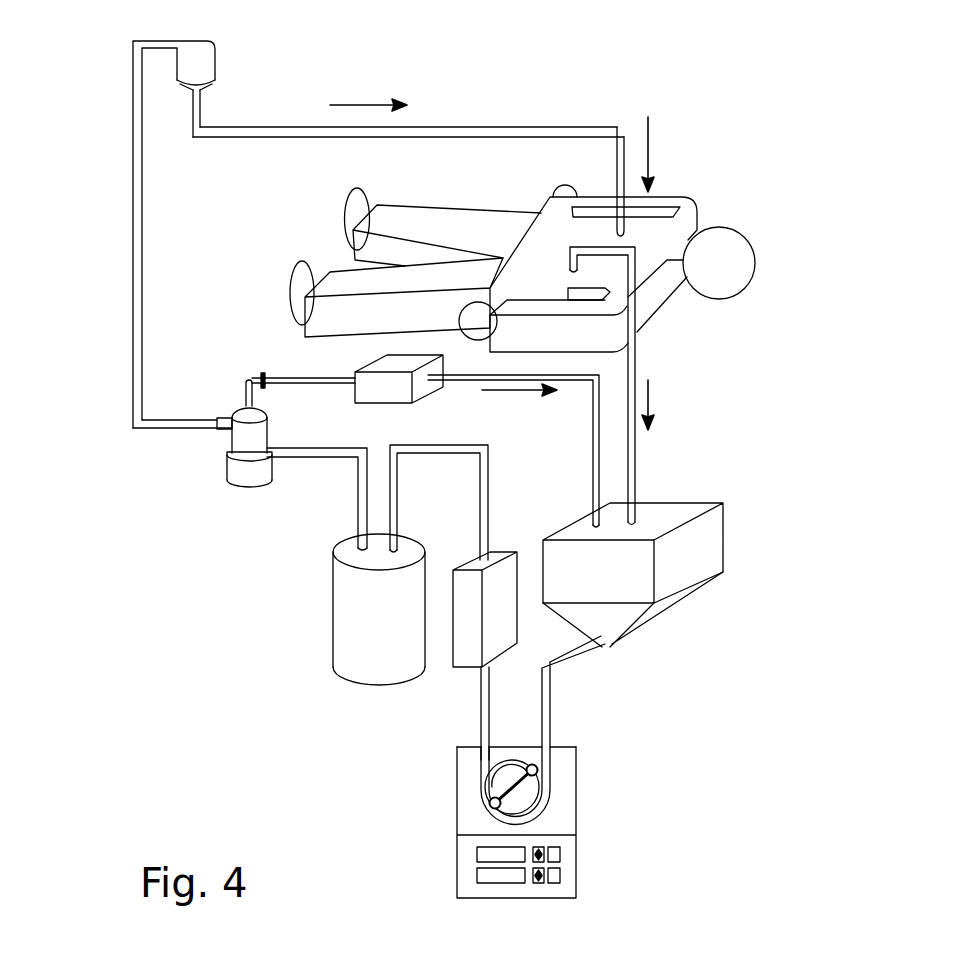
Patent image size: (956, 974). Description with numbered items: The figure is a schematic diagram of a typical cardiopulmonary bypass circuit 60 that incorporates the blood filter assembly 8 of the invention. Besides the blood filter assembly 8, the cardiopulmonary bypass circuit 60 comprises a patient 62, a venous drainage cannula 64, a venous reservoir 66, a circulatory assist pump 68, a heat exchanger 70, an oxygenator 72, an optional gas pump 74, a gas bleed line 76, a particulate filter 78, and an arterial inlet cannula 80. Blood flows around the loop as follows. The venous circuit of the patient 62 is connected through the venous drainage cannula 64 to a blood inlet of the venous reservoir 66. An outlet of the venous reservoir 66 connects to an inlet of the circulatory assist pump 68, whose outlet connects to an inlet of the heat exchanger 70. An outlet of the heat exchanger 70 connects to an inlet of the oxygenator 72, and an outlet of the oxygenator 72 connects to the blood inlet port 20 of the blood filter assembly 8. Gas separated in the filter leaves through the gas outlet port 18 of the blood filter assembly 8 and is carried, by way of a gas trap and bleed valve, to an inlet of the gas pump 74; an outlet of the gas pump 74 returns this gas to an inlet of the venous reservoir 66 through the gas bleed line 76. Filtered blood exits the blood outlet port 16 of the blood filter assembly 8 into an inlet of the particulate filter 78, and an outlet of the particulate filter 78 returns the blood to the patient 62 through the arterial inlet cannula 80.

The blood filter assembly 8 is at (233, 409).
The blood outlet port 16 is at (227, 428).
The gas outlet port 18 is at (254, 405).
The blood inlet port 20 is at (285, 458).
The cardiopulmonary bypass circuit 60 is at (538, 95).
The patient 62 is at (679, 195).
The venous drainage cannula 64 is at (632, 470).
The venous reservoir 66 is at (713, 502).
The circulatory assist pump 68 is at (577, 823).
The heat exchanger 70 is at (467, 657).
The oxygenator 72 is at (337, 627).
The gas pump 74 is at (425, 395).
The gas bleed line 76 is at (302, 375).
The particulate filter 78 is at (196, 57).
The arterial inlet cannula 80 is at (460, 127).